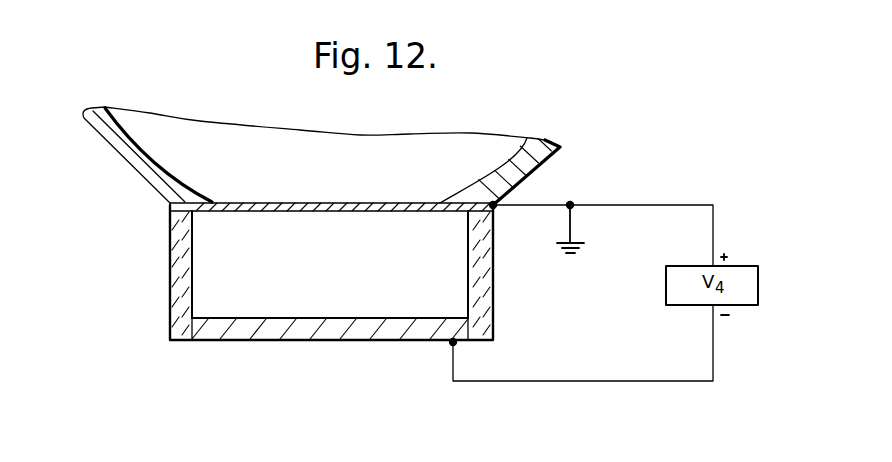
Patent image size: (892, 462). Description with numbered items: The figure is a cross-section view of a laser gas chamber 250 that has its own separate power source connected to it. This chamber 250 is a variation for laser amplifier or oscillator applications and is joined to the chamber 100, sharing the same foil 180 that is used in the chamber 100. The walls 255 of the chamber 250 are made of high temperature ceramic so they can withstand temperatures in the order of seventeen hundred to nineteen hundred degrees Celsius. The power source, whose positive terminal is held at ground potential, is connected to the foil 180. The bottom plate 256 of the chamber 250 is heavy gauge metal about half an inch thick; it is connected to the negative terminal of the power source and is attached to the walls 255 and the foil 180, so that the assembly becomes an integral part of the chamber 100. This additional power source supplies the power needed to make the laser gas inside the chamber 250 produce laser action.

The chamber 100 is at (552, 158).
The foil 180 is at (385, 210).
The chamber 250 is at (379, 341).
The walls 255 is at (177, 272).
The bottom plate 256 is at (262, 333).